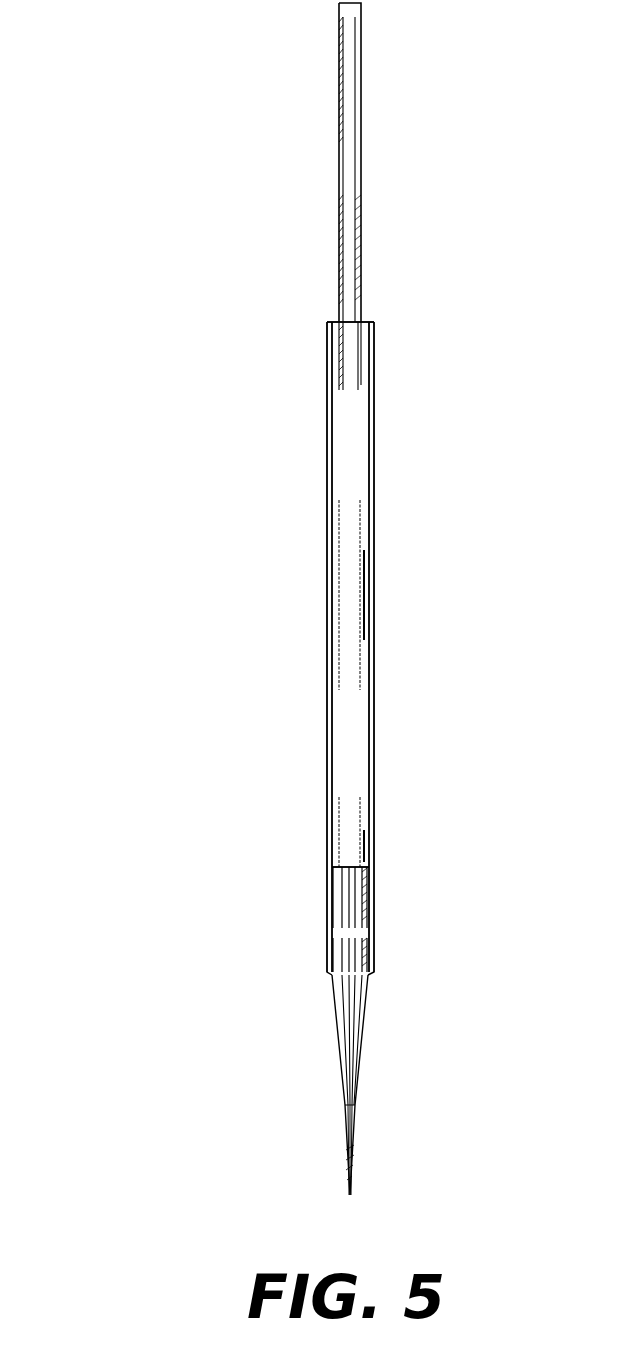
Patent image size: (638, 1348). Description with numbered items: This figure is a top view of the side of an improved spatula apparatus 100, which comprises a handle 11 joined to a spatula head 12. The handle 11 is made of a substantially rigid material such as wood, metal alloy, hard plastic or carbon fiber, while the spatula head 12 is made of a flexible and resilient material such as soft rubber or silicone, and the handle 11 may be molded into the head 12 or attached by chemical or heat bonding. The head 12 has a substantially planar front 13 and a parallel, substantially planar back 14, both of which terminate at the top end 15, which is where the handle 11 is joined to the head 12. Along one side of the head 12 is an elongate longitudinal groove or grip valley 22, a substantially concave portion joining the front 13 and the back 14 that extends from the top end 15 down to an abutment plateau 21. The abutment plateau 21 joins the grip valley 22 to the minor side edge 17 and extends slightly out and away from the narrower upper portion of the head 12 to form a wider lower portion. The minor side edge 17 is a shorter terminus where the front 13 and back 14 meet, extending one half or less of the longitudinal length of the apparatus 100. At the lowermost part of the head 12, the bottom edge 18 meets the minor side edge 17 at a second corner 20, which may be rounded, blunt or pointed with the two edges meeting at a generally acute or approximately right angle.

The improved spatula apparatus 100 is at (148, 120).
The handle 11 is at (350, 178).
The spatula head 12 is at (490, 645).
The front 13 is at (327, 458).
The back 14 is at (374, 458).
The top end 15 is at (369, 322).
The grip valley 22 is at (350, 620).
The abutment plateau 21 is at (348, 862).
The minor side edge 17 is at (352, 990).
The bottom edge 18 is at (352, 1130).
The second corner 20 is at (348, 1097).